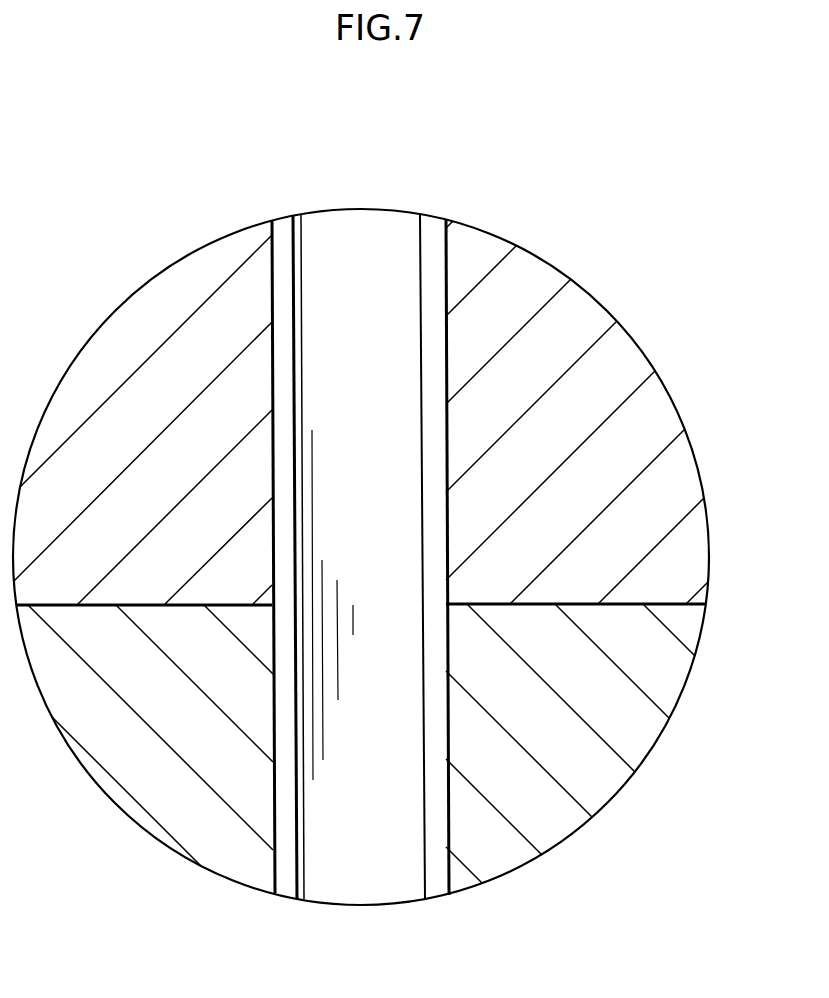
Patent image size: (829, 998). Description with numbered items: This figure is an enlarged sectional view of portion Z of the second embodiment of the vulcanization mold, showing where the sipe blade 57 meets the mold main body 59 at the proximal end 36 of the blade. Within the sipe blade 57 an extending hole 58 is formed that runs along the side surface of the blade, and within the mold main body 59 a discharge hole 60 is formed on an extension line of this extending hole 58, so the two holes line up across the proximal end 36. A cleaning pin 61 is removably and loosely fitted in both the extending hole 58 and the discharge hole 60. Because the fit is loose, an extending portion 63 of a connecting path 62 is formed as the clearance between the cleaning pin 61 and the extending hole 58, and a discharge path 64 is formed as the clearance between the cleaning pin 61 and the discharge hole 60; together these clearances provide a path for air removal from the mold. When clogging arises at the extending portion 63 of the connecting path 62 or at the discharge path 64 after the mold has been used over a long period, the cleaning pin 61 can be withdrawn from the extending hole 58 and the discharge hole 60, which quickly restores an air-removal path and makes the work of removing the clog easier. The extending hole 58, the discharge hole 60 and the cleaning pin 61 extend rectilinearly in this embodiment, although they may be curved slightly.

The proximal end 36 is at (623, 606).
The sipe blade 57 is at (643, 395).
The extending hole 58 is at (272, 300).
The mold main body 59 is at (632, 687).
The discharge hole 60 is at (426, 780).
The cleaning pin 61 is at (382, 237).
The connecting path 62 is at (430, 245).
The extending portion 63 is at (432, 354).
The discharge path 64 is at (435, 745).
The portion Z is at (490, 216).